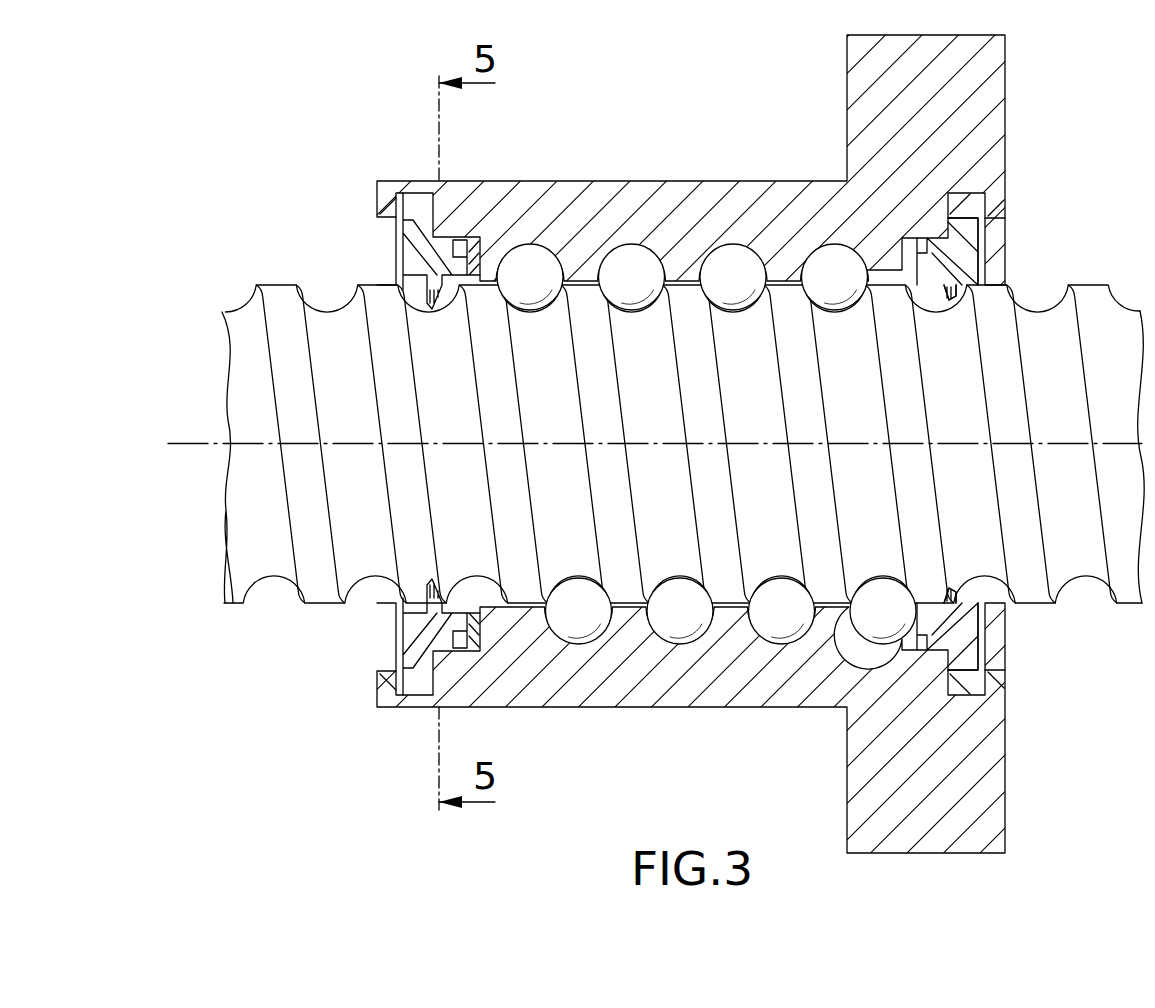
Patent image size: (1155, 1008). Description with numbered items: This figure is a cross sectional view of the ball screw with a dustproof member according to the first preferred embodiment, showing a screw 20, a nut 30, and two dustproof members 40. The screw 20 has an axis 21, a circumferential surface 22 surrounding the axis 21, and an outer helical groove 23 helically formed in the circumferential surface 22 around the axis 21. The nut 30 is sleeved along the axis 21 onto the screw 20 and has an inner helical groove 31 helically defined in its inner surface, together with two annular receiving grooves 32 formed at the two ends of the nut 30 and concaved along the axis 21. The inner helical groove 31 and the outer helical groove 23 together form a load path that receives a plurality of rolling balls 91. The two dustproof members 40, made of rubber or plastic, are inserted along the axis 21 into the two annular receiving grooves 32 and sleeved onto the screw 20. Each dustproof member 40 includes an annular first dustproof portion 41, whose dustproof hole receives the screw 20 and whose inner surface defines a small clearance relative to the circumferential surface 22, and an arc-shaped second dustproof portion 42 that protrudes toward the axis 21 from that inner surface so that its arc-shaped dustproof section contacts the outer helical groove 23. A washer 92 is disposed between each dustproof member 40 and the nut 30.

The screw 20 is at (642, 400).
The axis 21 is at (190, 443).
The circumferential surface 22 is at (270, 286).
The outer helical groove 23 is at (330, 309).
The nut 30 is at (577, 445).
The inner helical groove 31 is at (607, 181).
The annular receiving groove 32 is at (432, 212).
The dustproof member 40 is at (1003, 429).
The first dustproof portion 41 is at (960, 247).
The second dustproof portion 42 is at (952, 285).
The rolling balls 91 is at (527, 262).
The washer 92 is at (907, 245).